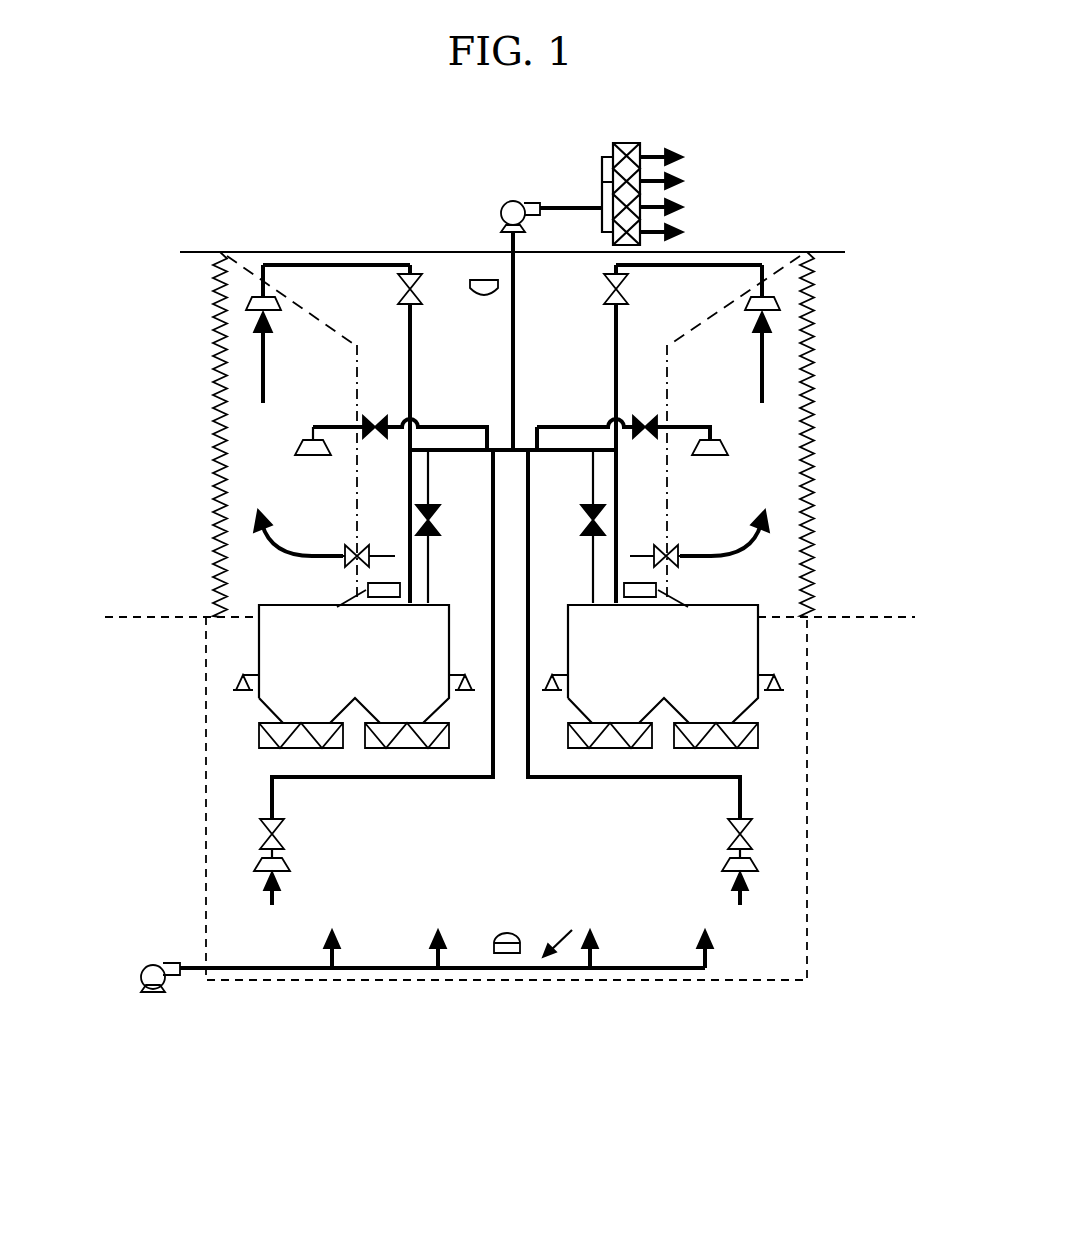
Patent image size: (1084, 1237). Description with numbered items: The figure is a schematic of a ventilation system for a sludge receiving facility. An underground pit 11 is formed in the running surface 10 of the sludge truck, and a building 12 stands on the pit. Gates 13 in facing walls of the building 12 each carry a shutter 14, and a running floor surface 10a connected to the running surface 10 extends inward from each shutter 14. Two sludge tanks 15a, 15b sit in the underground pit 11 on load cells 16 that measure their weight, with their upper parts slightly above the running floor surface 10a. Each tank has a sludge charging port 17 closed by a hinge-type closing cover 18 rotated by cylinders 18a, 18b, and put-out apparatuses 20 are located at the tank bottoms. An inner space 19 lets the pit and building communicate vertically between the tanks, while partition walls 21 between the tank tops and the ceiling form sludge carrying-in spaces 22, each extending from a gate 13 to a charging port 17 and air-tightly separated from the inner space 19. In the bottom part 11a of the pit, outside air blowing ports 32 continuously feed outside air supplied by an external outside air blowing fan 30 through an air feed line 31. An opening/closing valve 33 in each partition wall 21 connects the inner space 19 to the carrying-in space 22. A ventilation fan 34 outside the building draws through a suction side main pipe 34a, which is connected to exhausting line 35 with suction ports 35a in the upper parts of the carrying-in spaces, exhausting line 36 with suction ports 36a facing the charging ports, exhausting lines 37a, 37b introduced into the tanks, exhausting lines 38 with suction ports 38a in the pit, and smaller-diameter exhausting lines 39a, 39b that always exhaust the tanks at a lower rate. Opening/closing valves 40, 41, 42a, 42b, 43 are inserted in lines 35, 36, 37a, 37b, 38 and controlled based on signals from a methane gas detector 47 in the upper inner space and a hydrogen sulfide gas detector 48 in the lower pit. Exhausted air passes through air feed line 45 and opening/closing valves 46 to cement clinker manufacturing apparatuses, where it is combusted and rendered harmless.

The running surface 10 is at (135, 617).
The running floor surface 10a is at (212, 617).
The underground pit 11 is at (745, 979).
The bottom part of the underground pit 11a is at (575, 916).
The building 12 is at (345, 252).
The gate 13 is at (210, 347).
The shutter 14 is at (213, 495).
The sludge tank 15a is at (354, 664).
The sludge tank 15b is at (663, 664).
The load cell 16 is at (235, 683).
The sludge charging port 17 is at (300, 605).
The closing cover 18 is at (778, 606).
The cylinder 18a is at (383, 583).
The cylinder 18b is at (640, 583).
The inner space 19 is at (504, 852).
The put-out apparatus 20 is at (259, 740).
The partition wall 21 is at (360, 345).
The sludge carrying-in space 22 is at (514, 367).
The outside air blowing fan 30 is at (153, 992).
The air feed line 31 is at (270, 972).
The outside air blowing port 32 is at (336, 966).
The opening/closing valve 33 is at (345, 553).
The ventilation fan 34 is at (510, 200).
The suction side main pipe 34a is at (516, 330).
The exhausting line 35 is at (290, 265).
The suction port 35a is at (245, 303).
The exhausting line 36 is at (443, 427).
The suction port 36a is at (296, 447).
The exhausting line 37a is at (430, 545).
The exhausting line 37b is at (593, 545).
The exhausting line 38 is at (400, 778).
The suction port 38a is at (255, 862).
The exhausting line 39a is at (405, 462).
The exhausting line 39b is at (620, 462).
The opening/closing valve 40 is at (412, 275).
The opening/closing valve 41 is at (377, 415).
The opening/closing valve 42a is at (432, 512).
The opening/closing valve 42b is at (588, 512).
The opening/closing valve 43 is at (268, 833).
The air feed line 45 is at (562, 205).
The opening/closing valve 46 is at (632, 145).
The methane gas detector 47 is at (483, 278).
The hydrogen sulfide gas detector 48 is at (507, 955).